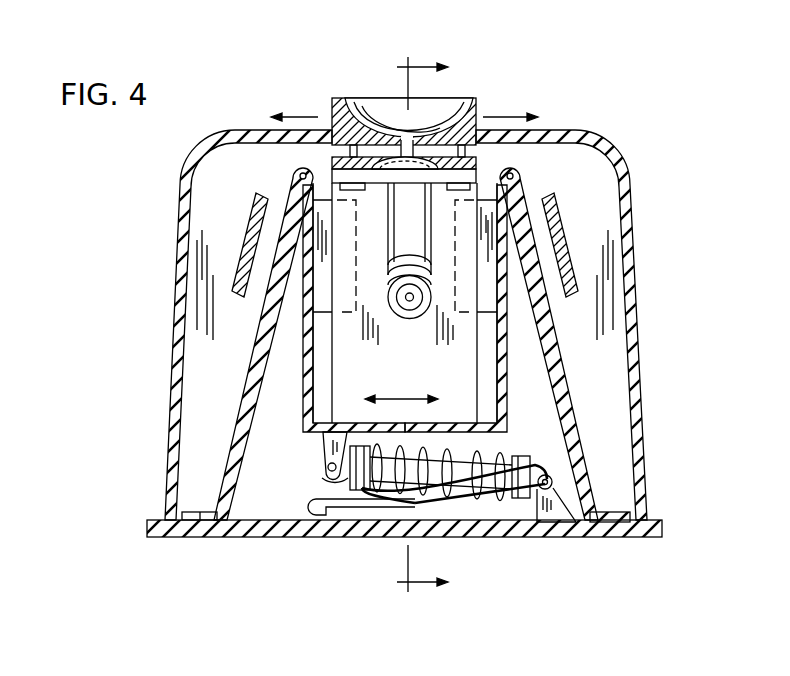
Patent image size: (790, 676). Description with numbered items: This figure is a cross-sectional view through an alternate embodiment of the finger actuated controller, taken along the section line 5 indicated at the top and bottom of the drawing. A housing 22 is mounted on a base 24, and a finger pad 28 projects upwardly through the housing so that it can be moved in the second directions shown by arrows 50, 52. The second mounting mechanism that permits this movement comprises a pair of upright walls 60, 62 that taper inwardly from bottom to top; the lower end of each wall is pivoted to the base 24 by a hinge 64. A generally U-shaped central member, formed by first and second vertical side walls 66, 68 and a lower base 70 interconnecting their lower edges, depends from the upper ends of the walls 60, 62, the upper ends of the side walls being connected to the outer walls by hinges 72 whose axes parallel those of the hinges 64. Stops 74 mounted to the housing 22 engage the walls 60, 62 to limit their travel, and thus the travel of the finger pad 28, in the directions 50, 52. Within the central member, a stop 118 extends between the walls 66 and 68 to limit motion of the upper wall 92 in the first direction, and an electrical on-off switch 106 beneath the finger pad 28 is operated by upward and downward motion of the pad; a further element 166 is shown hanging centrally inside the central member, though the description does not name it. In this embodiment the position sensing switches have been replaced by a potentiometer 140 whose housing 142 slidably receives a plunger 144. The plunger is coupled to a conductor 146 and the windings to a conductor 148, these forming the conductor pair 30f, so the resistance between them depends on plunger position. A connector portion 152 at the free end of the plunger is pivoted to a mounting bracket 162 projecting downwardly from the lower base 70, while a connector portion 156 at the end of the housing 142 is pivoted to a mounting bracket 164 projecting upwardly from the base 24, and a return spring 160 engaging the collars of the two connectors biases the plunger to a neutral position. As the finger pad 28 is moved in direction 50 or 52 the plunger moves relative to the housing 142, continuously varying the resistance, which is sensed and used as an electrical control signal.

The section line 5- 5 is at (418, 328).
The housing 22 is at (639, 289).
The base 24 is at (631, 538).
The finger pad 28 is at (343, 108).
The conductor pair 30f is at (334, 537).
The second direction arrow 50 is at (505, 117).
The second direction arrow 52 is at (302, 117).
The upright wall 60 is at (568, 396).
The upright wall 62 is at (255, 355).
The hinge 64 is at (597, 512).
The first vertical side wall 66 is at (305, 382).
The second vertical side wall 68 is at (505, 386).
The lower base 70 is at (447, 424).
The hinge 72 is at (518, 177).
The stop 74 is at (253, 222).
The upper wall 92 is at (417, 373).
The electrical on-off switch 106 is at (432, 148).
The stop 118 is at (483, 202).
The potentiometer 140 is at (500, 500).
The potentiometer housing 142 is at (437, 455).
The plunger 144 is at (386, 448).
The conductor 146 is at (340, 500).
The conductor 148 is at (472, 490).
The connector portion 152 is at (338, 480).
The connector portion 156 is at (535, 470).
The return spring 160 is at (548, 472).
The potentiometer mounting bracket 162 is at (328, 448).
The mounting bracket 164 is at (557, 519).
The plunger 166 is at (409, 318).